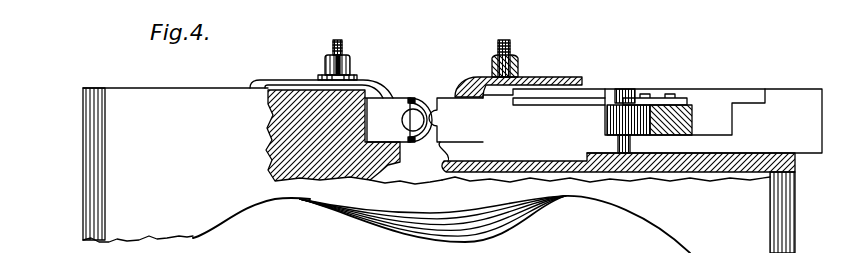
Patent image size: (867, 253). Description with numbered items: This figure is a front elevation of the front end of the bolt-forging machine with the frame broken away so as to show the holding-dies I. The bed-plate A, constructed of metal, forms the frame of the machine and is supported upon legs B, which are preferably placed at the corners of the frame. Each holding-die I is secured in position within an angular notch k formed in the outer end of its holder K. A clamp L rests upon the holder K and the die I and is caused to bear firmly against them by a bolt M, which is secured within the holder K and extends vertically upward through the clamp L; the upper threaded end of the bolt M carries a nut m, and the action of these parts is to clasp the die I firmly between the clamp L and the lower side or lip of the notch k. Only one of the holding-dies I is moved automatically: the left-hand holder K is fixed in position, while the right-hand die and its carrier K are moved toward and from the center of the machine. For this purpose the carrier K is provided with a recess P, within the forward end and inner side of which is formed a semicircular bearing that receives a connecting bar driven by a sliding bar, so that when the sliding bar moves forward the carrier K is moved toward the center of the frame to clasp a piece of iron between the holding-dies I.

The bed-plate A is at (175, 165).
The legs B is at (766, 212).
The holder K is at (544, 136).
The holding-dies I is at (424, 120).
The angular notch k is at (467, 143).
The clamp L is at (416, 81).
The bolt M is at (422, 50).
The nut m is at (351, 65).
The recess P is at (649, 112).
The stem b is at (616, 144).